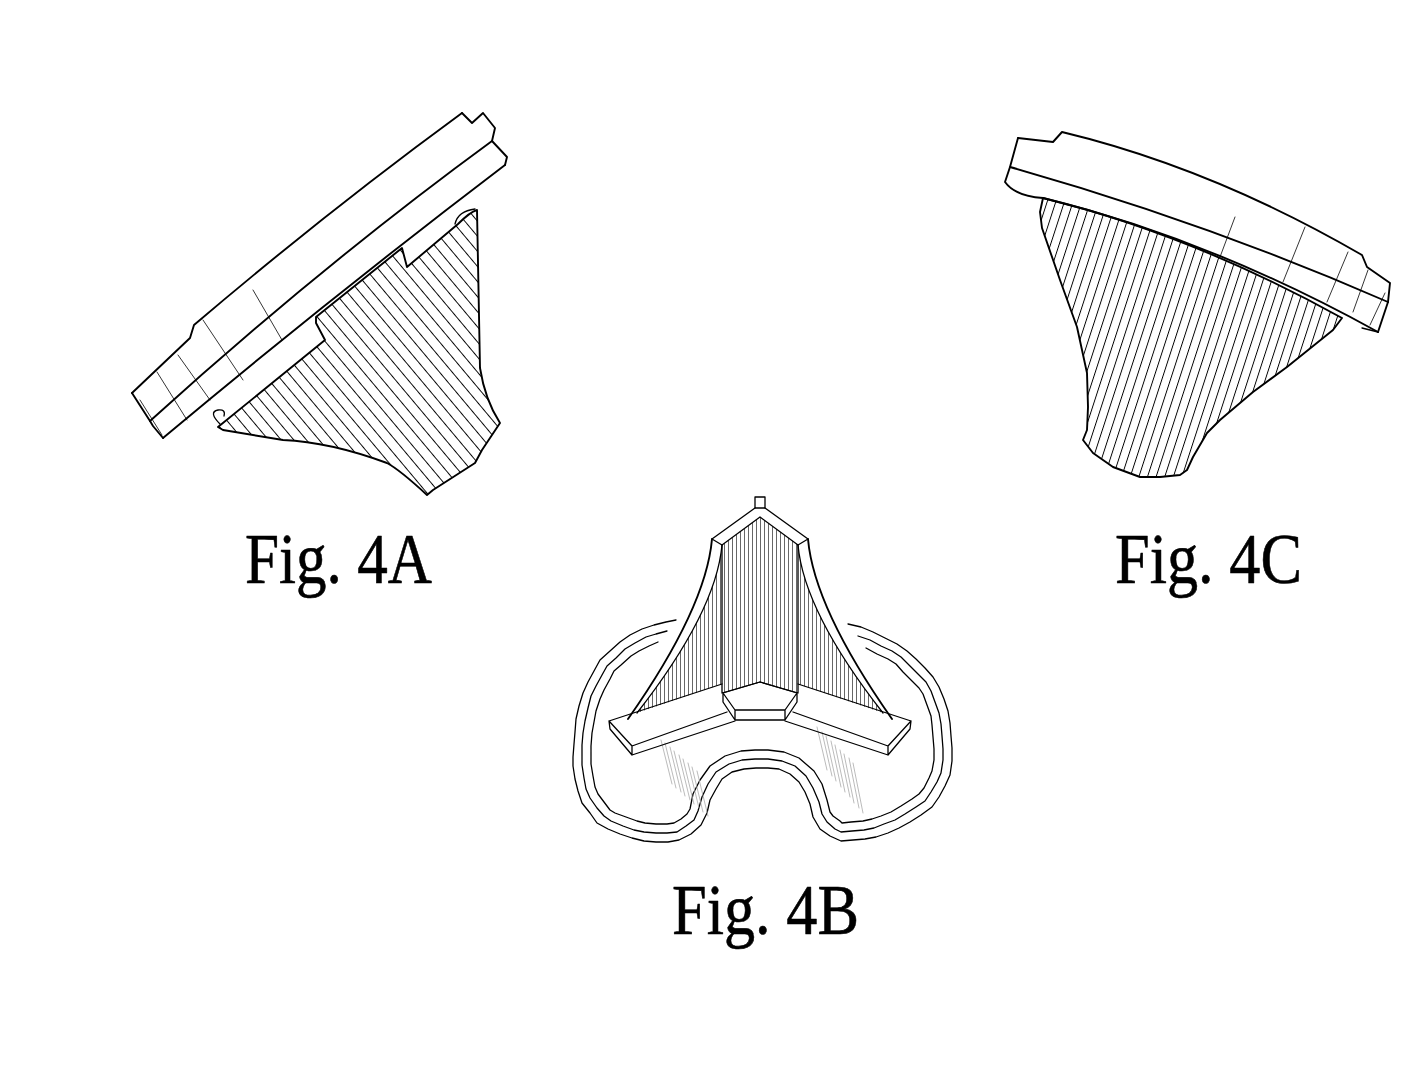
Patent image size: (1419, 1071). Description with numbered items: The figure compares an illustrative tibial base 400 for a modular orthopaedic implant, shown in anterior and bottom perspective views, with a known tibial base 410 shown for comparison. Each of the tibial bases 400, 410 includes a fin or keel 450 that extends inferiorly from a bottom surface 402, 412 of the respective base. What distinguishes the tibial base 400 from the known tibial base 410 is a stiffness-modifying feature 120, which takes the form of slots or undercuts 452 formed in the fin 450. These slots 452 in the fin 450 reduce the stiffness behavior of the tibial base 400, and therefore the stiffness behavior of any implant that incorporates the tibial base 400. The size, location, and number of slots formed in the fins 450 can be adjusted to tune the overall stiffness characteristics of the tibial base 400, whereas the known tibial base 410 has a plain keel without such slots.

In FIG. 4A, the tibial base 400 is at (246, 136).
In FIG. 4B, the tibial base 400 is at (822, 476).
In FIG. 4A, the stiffness-modifying feature 120 is at (502, 226).
In FIG. 4A, the fin or keel 450 is at (476, 328).
In FIG. 4B, the fin or keel 450 is at (808, 570).
In FIG. 4C, the fin or keel 450 is at (1252, 392).
In FIG. 4A, the slots or undercuts 452 is at (456, 224).
In FIG. 4B, the slots or undercuts 452 is at (612, 731).
In FIG. 4B, the bottom surface 402 is at (637, 805).
In FIG. 4C, the known tibial base 410 is at (1302, 139).
In FIG. 4C, the bottom surface 412 is at (1364, 332).